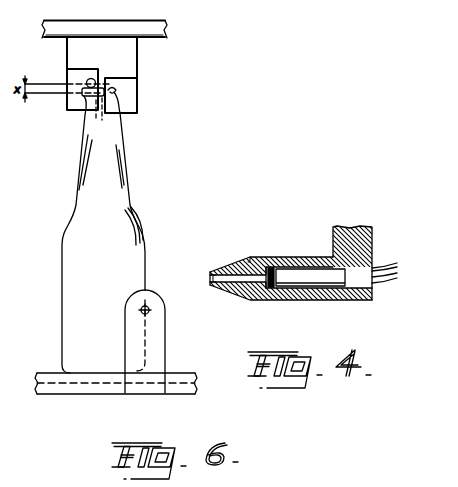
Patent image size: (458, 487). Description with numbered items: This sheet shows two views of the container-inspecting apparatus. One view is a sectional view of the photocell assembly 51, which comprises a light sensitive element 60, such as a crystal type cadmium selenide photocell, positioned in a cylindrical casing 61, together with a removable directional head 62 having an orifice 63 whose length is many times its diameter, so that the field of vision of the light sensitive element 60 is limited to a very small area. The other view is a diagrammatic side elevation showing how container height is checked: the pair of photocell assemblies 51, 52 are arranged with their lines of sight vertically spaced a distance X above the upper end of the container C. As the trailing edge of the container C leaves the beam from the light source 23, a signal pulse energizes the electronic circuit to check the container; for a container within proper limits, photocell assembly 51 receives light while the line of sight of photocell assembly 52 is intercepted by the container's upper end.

In FIG. 6, the photocell assembly 51 is at (68, 79).
In FIG. 4, the photocell assembly 51 is at (298, 254).
In FIG. 6, the photocell assembly 52 is at (128, 90).
In FIG. 6, the light source 23 is at (150, 307).
In FIG. 6, the container C is at (130, 233).
In FIG. 4, the light sensitive element 60 is at (312, 277).
In FIG. 4, the cylindrical casing 61 is at (307, 295).
In FIG. 4, the removable directional head 62 is at (227, 272).
In FIG. 4, the orifice 63 is at (217, 269).